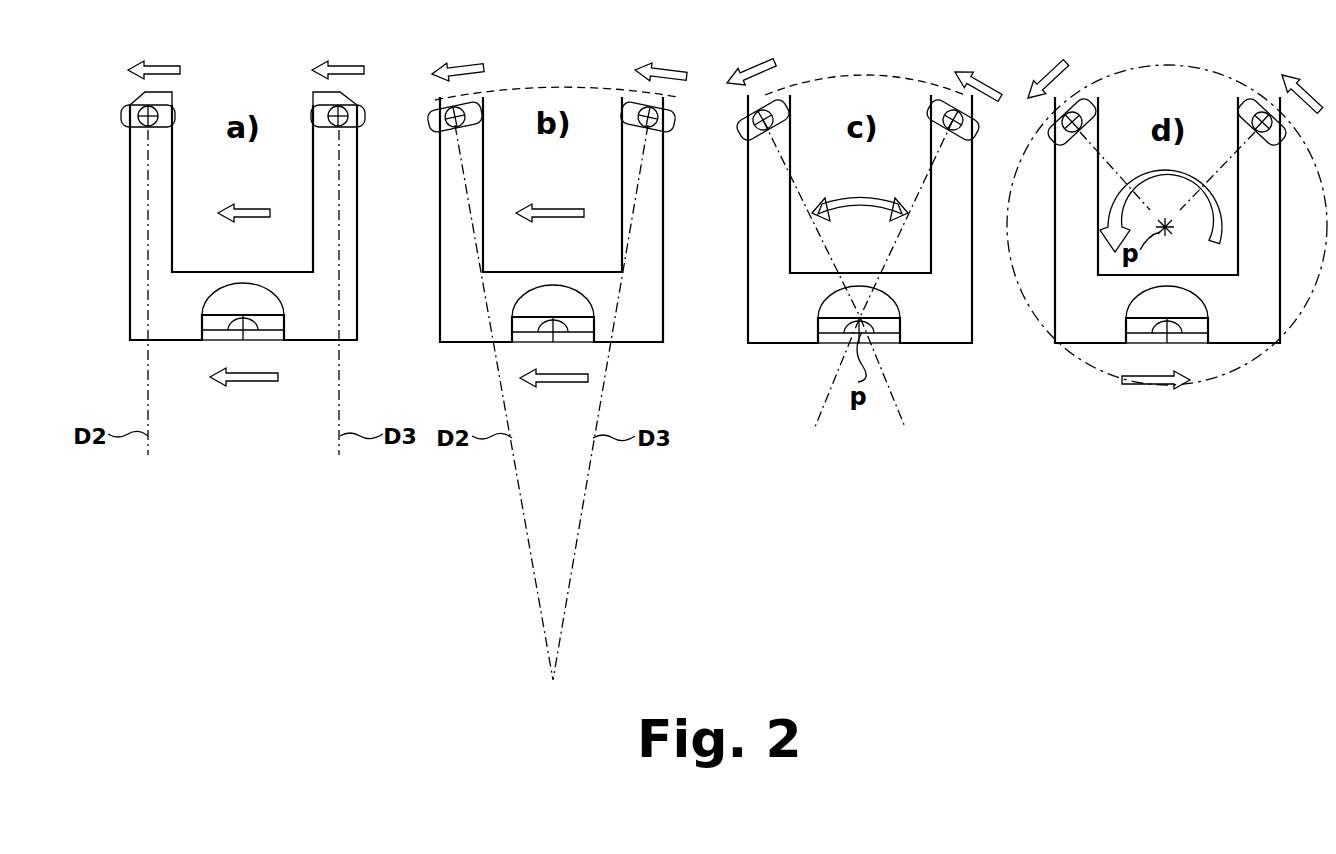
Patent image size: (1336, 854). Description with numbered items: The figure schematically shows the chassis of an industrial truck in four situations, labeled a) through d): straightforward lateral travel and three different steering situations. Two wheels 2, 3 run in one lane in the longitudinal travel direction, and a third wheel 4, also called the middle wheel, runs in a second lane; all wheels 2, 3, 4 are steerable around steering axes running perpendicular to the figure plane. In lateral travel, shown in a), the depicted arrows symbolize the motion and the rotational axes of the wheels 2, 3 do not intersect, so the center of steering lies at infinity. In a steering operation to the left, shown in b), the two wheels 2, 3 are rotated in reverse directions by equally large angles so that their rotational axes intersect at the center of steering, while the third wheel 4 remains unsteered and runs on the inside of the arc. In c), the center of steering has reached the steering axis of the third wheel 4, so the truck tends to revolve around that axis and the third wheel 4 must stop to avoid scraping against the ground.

The wheel 2 is at (165, 100).
The wheel 3 is at (350, 100).
The third wheel 4 is at (236, 344).